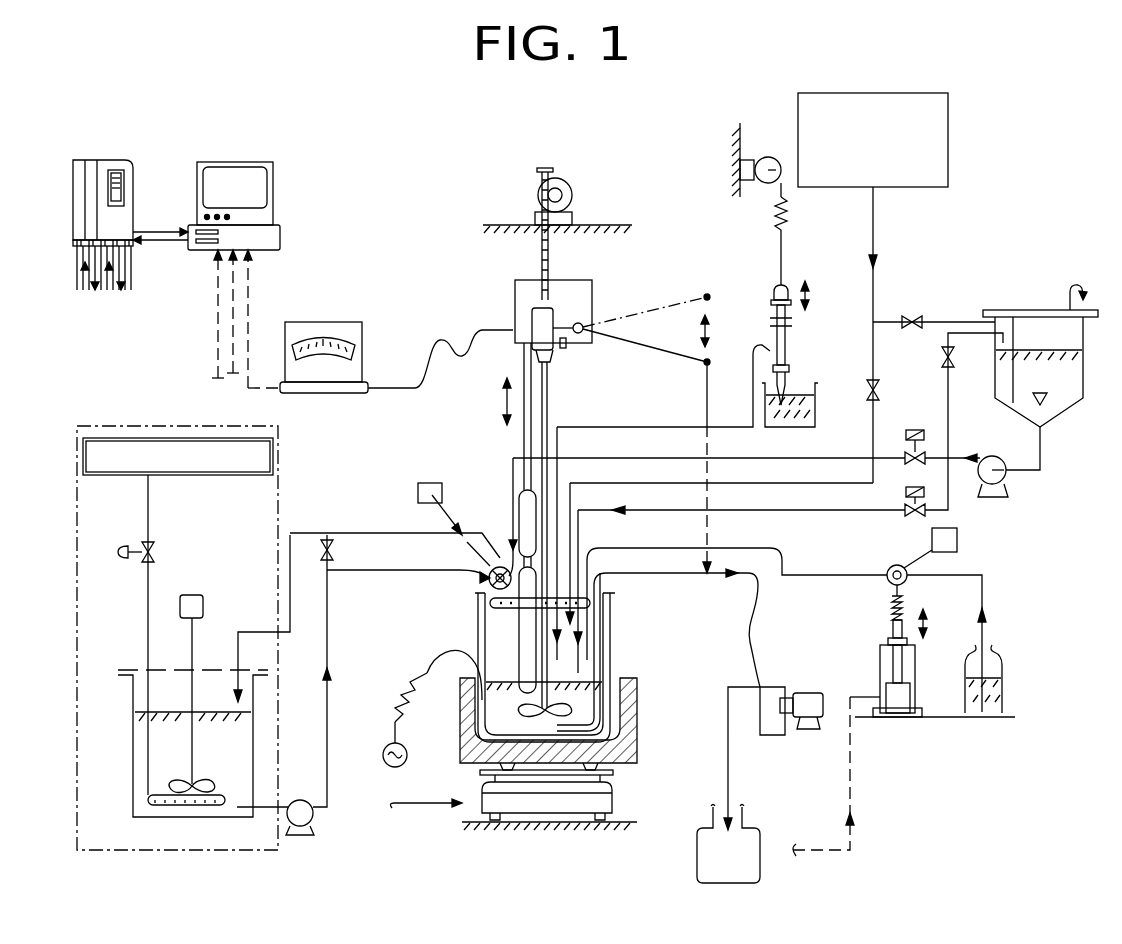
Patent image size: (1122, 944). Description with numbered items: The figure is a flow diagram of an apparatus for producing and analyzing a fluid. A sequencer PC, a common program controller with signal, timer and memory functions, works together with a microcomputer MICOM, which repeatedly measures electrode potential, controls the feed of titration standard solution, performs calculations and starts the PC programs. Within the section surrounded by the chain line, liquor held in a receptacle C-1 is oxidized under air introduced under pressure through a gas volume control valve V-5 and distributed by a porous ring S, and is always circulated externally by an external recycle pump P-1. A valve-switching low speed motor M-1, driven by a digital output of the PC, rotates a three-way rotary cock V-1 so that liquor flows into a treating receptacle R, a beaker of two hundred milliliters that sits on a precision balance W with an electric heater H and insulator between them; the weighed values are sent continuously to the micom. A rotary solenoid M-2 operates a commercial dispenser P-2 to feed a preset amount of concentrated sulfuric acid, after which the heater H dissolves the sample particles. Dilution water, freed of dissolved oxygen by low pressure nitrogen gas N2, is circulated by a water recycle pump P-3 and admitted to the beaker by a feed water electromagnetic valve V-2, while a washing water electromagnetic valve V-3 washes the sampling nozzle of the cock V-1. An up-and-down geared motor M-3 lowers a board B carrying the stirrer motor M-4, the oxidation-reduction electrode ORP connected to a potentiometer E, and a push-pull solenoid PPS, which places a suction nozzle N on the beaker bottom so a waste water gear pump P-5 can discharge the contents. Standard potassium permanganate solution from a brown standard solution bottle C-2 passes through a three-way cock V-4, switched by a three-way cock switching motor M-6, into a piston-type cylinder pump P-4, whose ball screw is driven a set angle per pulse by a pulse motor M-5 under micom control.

The sequencer PC is at (120, 152).
The micom MICOM is at (273, 172).
The potentiometer E is at (333, 422).
The up-and-down geared motor M-3 is at (572, 160).
The board B is at (592, 297).
The stirrer motor M-4 is at (530, 310).
The push-pull solenoid PPS is at (570, 343).
The oxidation-reduction electrode ORP is at (522, 668).
The porous ring S is at (512, 632).
The valve-switching low speed motor M-1 is at (406, 508).
The 3-way rotary cock V-1 is at (478, 583).
The heater H is at (452, 655).
The treating receptacle R is at (615, 650).
The suction nozzle N is at (620, 580).
The precision balance W is at (614, 798).
The rotary solenoid M-2 is at (717, 176).
The commercial dispenser P-2 is at (845, 356).
The low pressure N2 gas N2 is at (780, 358).
The washing water electromagnetic valve V-3 is at (935, 425).
The feed water electromagnetic valve V-2 is at (788, 503).
The water recycle pump P-3 is at (1072, 501).
The gas volume control valve V-5 is at (205, 558).
The receptacle C-1 is at (118, 728).
The external recycle pump P-1 is at (328, 877).
The 3-way cock V-4 is at (878, 565).
The 3-way cock switching motor M-6 is at (1005, 555).
The cylinder pump P-4 is at (880, 630).
The pulse motor M-5 is at (957, 704).
The brown standard solution bottle C-2 is at (1050, 706).
The waste water gear pump P-5 is at (825, 764).